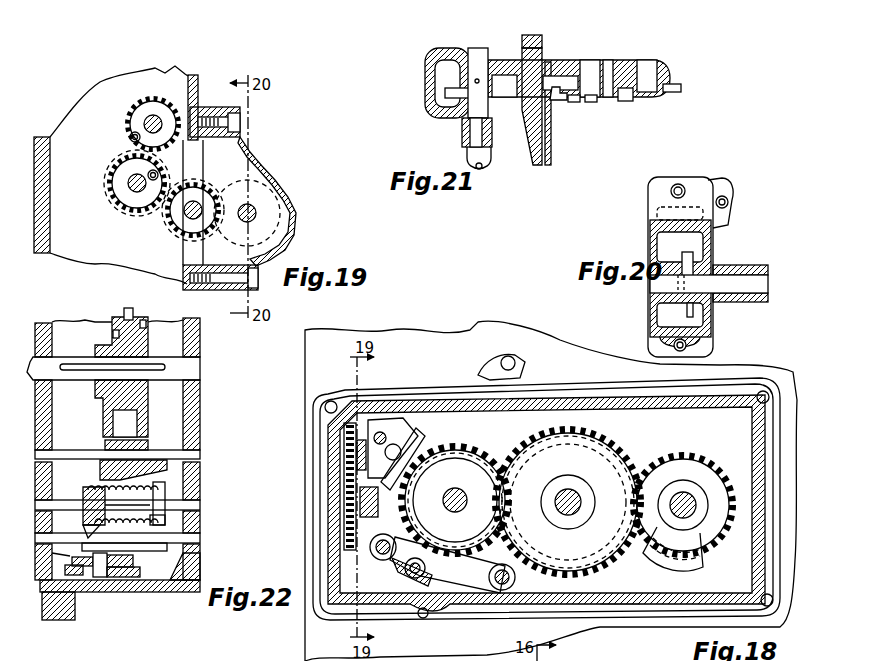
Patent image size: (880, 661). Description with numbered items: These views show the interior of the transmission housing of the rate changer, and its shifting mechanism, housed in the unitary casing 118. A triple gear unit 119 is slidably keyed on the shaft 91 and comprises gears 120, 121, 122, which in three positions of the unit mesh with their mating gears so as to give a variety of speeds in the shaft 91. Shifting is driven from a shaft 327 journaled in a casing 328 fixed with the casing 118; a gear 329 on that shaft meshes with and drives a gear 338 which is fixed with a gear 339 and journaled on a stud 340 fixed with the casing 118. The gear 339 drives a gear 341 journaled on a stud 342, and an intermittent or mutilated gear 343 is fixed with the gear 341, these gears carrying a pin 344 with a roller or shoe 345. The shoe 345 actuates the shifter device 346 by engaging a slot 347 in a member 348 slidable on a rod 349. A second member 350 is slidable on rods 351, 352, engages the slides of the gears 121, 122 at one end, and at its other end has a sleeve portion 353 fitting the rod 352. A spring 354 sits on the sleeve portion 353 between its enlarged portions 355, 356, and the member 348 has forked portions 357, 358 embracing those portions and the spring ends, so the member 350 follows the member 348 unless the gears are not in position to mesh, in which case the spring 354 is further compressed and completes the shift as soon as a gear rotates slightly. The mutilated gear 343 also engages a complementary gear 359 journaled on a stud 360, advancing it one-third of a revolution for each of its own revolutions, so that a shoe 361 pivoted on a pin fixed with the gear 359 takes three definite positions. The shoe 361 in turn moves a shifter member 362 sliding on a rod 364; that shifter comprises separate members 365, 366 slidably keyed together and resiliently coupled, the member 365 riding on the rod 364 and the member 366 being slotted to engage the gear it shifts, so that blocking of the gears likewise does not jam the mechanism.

In FIG. 22, the shaft 91 is at (196, 367).
In FIG. 22, the casing 118 is at (130, 590).
In FIG. 21, the casing 118 is at (540, 62).
In FIG. 18, the casing 118 is at (650, 601).
In FIG. 22, the triple gear unit 119 is at (147, 398).
In FIG. 22, the gear 120 is at (148, 320).
In FIG. 22, the gear 121 is at (126, 306).
In FIG. 22, the gear 122 is at (112, 316).
In FIG. 19, the shaft 327 is at (262, 213).
In FIG. 21, the shaft 327 is at (478, 50).
In FIG. 20, the shaft 327 is at (653, 287).
In FIG. 21, the casing 328 is at (428, 60).
In FIG. 20, the casing 328 is at (655, 310).
In FIG. 19, the gear 329 is at (270, 204).
In FIG. 21, the gear 329 is at (445, 94).
In FIG. 20, the gear 329 is at (655, 342).
In FIG. 19, the gear 338 is at (205, 183).
In FIG. 21, the gear 338 is at (553, 125).
In FIG. 21, the gear 339 is at (552, 87).
In FIG. 21, the stud 340 is at (532, 36).
In FIG. 21, the gear 341 is at (606, 66).
In FIG. 18, the gear 341 is at (348, 527).
In FIG. 21, the stud 342 is at (590, 62).
In FIG. 19, the mutilated gear 343 is at (122, 192).
In FIG. 21, the mutilated gear 343 is at (560, 98).
In FIG. 18, the mutilated gear 343 is at (345, 550).
In FIG. 22, the pin 344 is at (105, 566).
In FIG. 21, the pin 344 is at (574, 102).
In FIG. 19, the shoe 345 is at (193, 194).
In FIG. 22, the shoe 345 is at (122, 553).
In FIG. 21, the shoe 345 is at (591, 102).
In FIG. 22, the shifter device 346 is at (172, 472).
In FIG. 18, the shifter device 346 is at (466, 592).
In FIG. 22, the slot 347 is at (55, 555).
In FIG. 22, the member 348 is at (168, 548).
In FIG. 18, the member 348 is at (372, 553).
In FIG. 22, the rod 349 is at (198, 538).
In FIG. 18, the rod 349 is at (405, 569).
In FIG. 22, the member 350 is at (148, 445).
In FIG. 18, the member 350 is at (683, 574).
In FIG. 22, the rod 351 is at (196, 455).
In FIG. 18, the rod 351 is at (502, 591).
In FIG. 22, the rod 352 is at (200, 505).
In FIG. 18, the rod 352 is at (425, 583).
In FIG. 22, the sleeve portion 353 is at (147, 514).
In FIG. 22, the spring 354 is at (113, 485).
In FIG. 22, the enlarged projecting portion 355 is at (86, 492).
In FIG. 22, the enlarged projecting portion 356 is at (165, 490).
In FIG. 22, the forked portion 357 is at (85, 531).
In FIG. 22, the forked portion 358 is at (165, 527).
In FIG. 19, the gear 359 is at (130, 110).
In FIG. 21, the gear 359 is at (681, 88).
In FIG. 18, the gear 359 is at (355, 420).
In FIG. 19, the stud 360 is at (144, 127).
In FIG. 21, the stud 360 is at (653, 62).
In FIG. 19, the shoe 361 is at (128, 138).
In FIG. 21, the shoe 361 is at (630, 98).
In FIG. 18, the shifter member 362 is at (473, 411).
In FIG. 18, the rod 364 is at (380, 432).
In FIG. 18, the member 365 is at (403, 432).
In FIG. 18, the member 366 is at (427, 441).